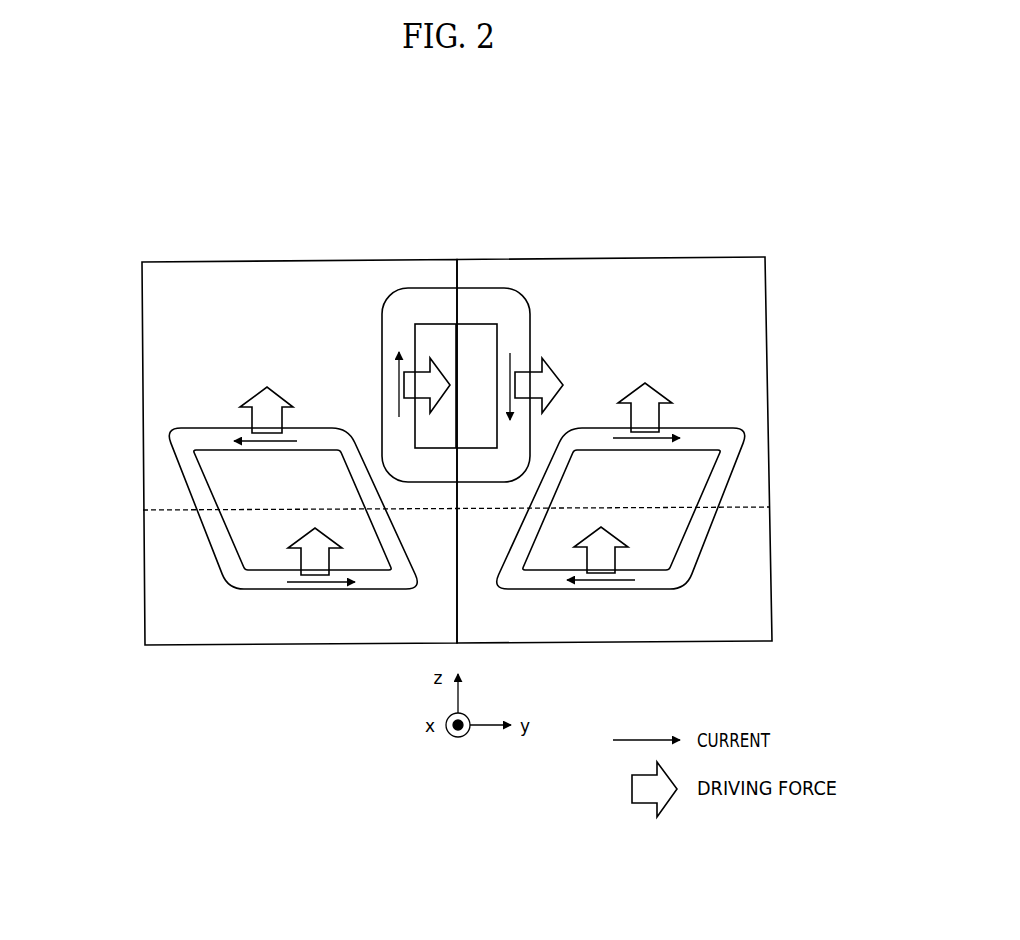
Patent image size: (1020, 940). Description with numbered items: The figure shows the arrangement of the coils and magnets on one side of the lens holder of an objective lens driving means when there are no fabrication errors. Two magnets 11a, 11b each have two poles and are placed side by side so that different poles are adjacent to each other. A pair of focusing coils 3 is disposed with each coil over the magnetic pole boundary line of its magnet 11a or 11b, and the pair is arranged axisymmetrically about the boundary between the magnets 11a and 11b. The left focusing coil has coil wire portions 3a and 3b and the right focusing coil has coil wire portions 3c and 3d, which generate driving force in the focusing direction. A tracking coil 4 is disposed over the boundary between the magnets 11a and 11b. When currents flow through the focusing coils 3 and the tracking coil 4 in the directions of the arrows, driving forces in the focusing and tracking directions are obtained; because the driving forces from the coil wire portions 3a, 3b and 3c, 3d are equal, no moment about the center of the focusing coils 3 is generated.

The focusing coil 3 is at (198, 492).
The coil wire portion 3a is at (210, 433).
The coil wire portion 3b is at (274, 580).
The coil wire portion 3c is at (697, 433).
The coil wire portion 3d is at (650, 580).
The tracking coil 4 is at (512, 336).
The magnet 11a is at (240, 288).
The magnet 11b is at (692, 277).